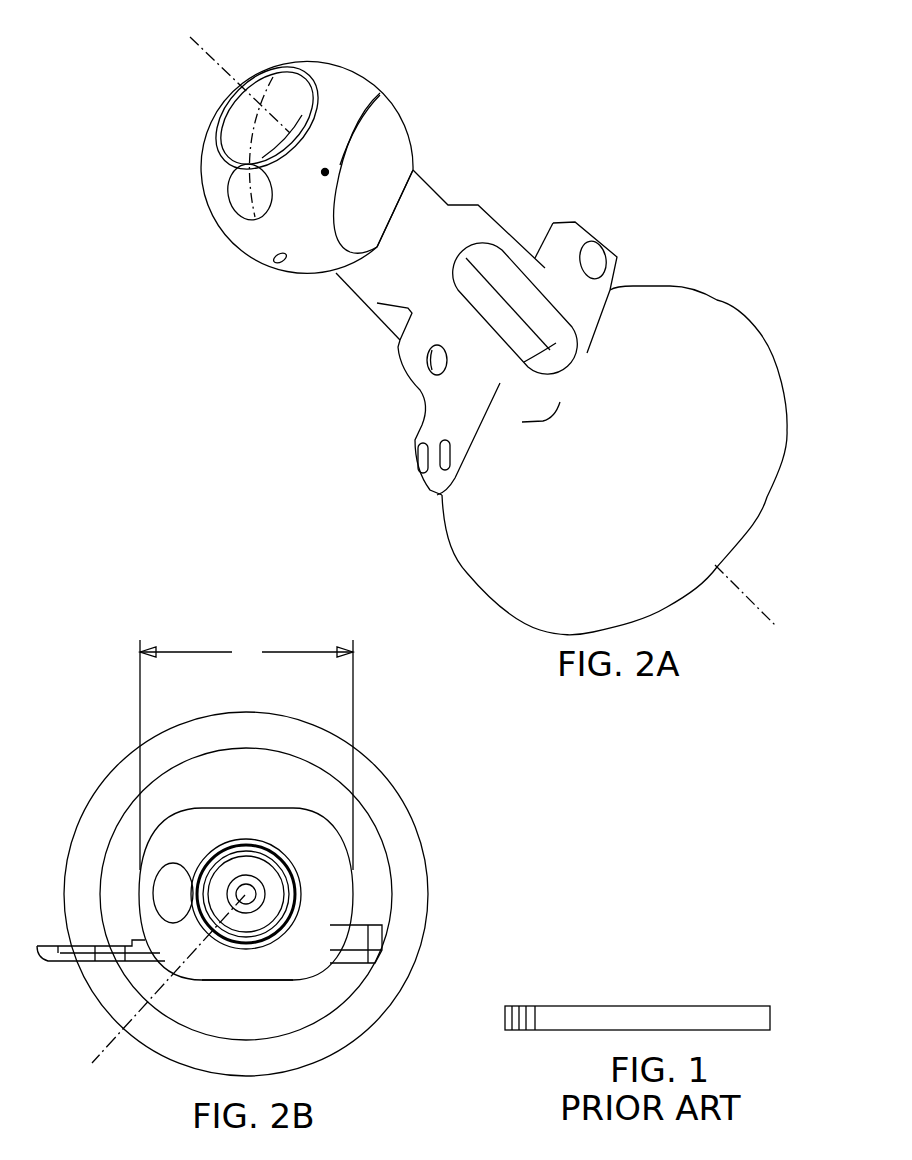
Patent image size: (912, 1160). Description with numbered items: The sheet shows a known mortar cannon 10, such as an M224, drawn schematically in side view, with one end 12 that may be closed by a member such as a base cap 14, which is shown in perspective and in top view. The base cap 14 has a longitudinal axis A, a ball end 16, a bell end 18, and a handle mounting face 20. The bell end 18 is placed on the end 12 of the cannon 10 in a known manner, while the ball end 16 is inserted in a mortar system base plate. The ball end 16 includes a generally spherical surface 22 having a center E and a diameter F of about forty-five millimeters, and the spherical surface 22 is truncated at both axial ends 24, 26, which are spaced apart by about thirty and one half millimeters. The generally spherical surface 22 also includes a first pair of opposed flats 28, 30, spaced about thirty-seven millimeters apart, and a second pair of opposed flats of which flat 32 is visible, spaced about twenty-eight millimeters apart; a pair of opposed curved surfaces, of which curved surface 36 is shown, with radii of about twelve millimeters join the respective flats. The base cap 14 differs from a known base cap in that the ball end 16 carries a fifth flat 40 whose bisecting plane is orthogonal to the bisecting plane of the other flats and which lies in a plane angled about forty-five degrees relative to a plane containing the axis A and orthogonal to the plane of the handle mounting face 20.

In FIG. 1, the mortar cannon 10 is at (601, 963).
In FIG. 1, the end of cannon 12 is at (505, 1022).
In FIG. 2A, the base cap 14 is at (178, 88).
In FIG. 2B, the base cap 14 is at (121, 692).
In FIG. 2A, the ball end 16 is at (306, 58).
In FIG. 2B, the ball end 16 is at (365, 879).
In FIG. 2A, the bell end 18 is at (748, 281).
In FIG. 2B, the bell end 18 is at (197, 717).
In FIG. 2A, the handle mounting face 20 is at (573, 235).
In FIG. 2B, the handle mounting face 20 is at (60, 963).
In FIG. 2A, the generally spherical surface 22 is at (338, 72).
In FIG. 2B, the generally spherical surface 22 is at (330, 853).
In FIG. 2A, the truncated axial end 24 is at (233, 135).
In FIG. 2A, the truncated axial end 26 is at (438, 150).
In FIG. 2A, the first flat 28 is at (360, 118).
In FIG. 2B, the first flat 28 is at (215, 984).
In FIG. 2B, the first flat 30 is at (255, 808).
In FIG. 2A, the second flat 32 is at (400, 118).
In FIG. 2A, the curved surface 36 is at (330, 215).
In FIG. 2A, the fifth flat 40 is at (238, 190).
In FIG. 2B, the fifth flat 40 is at (160, 895).
In FIG. 2A, the longitudinal axis A is at (231, 117).
In FIG. 2B, the longitudinal axis A is at (157, 990).
In FIG. 2A, the center E is at (322, 174).
In FIG. 2B, the diameter F is at (246, 754).